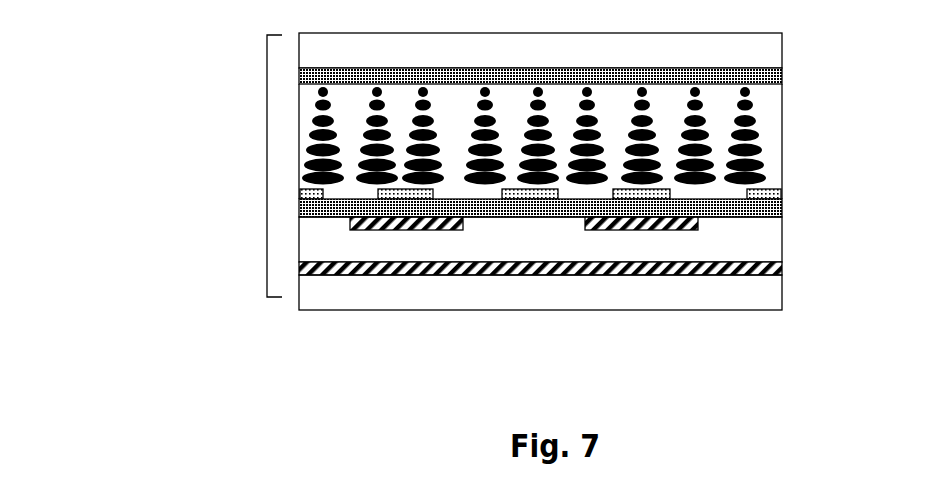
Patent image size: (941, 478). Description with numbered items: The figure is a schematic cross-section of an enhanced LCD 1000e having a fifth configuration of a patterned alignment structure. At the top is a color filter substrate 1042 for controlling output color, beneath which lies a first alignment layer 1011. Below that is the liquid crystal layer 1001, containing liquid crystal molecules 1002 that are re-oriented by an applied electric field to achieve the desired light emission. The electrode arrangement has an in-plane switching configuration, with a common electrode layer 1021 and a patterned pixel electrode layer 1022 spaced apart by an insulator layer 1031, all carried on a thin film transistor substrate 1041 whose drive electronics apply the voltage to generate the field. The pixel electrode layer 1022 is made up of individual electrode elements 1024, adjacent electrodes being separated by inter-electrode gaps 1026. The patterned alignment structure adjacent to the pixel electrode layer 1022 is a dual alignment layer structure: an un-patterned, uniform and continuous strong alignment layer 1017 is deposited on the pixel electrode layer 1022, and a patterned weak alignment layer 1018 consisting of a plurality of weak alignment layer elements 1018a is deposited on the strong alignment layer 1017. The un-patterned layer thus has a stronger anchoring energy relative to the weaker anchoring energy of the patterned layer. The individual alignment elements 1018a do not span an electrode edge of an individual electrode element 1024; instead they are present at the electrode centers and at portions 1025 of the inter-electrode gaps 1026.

The enhanced LCD 1000e is at (267, 168).
The color filter substrate 1042 is at (785, 33).
The first alignment layer 1011 is at (785, 68).
The liquid crystal layer 1001 is at (785, 84).
The liquid crystal molecules 1002 is at (703, 148).
The patterned weak alignment layer 1018 is at (785, 188).
The weak alignment layer element 1018a is at (760, 198).
The strong alignment layer 1017 is at (785, 199).
The pixel electrode layer 1022 is at (785, 217).
The individual electrode element 1024 is at (408, 228).
The inter-electrode gap 1026 is at (482, 223).
The portion of inter-electrode gap 1025 is at (497, 238).
The insulator layer 1031 is at (785, 230).
The common electrode layer 1021 is at (785, 262).
The thin film transistor substrate 1041 is at (785, 275).